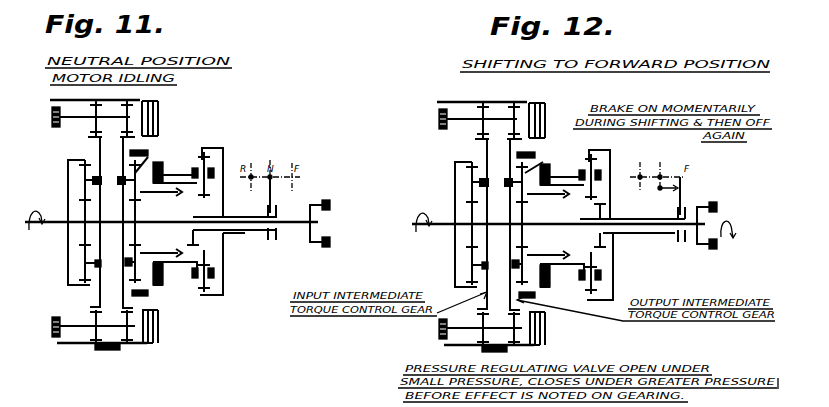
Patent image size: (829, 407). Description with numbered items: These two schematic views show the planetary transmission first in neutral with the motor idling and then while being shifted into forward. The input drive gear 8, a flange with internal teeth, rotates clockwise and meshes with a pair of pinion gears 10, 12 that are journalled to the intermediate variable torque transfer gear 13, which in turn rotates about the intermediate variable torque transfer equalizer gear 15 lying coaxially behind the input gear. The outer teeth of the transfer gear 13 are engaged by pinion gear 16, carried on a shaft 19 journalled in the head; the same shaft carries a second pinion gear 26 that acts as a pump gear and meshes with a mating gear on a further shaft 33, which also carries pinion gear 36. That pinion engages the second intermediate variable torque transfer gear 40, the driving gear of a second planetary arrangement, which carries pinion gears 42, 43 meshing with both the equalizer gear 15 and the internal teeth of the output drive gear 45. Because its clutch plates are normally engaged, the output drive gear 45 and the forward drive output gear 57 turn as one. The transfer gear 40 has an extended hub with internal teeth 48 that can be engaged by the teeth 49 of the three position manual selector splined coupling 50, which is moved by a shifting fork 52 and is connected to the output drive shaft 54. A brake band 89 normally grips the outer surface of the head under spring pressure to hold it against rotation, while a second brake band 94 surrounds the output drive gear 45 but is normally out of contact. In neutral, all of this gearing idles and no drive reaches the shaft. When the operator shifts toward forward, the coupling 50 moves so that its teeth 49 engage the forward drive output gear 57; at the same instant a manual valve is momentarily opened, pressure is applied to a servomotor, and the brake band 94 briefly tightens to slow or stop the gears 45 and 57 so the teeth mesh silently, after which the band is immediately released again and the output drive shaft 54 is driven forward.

In FIG. 11, the input drive gear 8 is at (66, 188).
In FIG. 12, the input drive gear 8 is at (455, 223).
In FIG. 11, the pinion gear 10 is at (69, 166).
In FIG. 12, the pinion gear 10 is at (445, 224).
In FIG. 11, the pinion gear 12 is at (95, 264).
In FIG. 12, the pinion gear 12 is at (477, 267).
In FIG. 11, the intermediate variable torque transfer gear 13 is at (98, 300).
In FIG. 12, the intermediate variable torque transfer gear 13 is at (475, 224).
In FIG. 11, the intermediate variable torque transfer equalizer gear 15 is at (108, 217).
In FIG. 12, the intermediate variable torque transfer equalizer gear 15 is at (558, 214).
In FIG. 11, the pinion gear 16 is at (86, 107).
In FIG. 12, the pinion gear 16 is at (479, 97).
In FIG. 11, the shaft 19 is at (75, 118).
In FIG. 12, the shaft 19 is at (474, 137).
In FIG. 11, the second pinion gear 26 is at (52, 118).
In FIG. 12, the second pinion gear 26 is at (463, 228).
In FIG. 11, the shaft 33 is at (142, 102).
In FIG. 12, the shaft 33 is at (527, 112).
In FIG. 11, the pinion gear 36 is at (133, 149).
In FIG. 12, the pinion gear 36 is at (543, 132).
In FIG. 11, the second intermediate variable torque transfer gear 40 is at (114, 283).
In FIG. 12, the second intermediate variable torque transfer gear 40 is at (634, 238).
In FIG. 11, the pinion gear 42 is at (163, 164).
In FIG. 12, the pinion gear 42 is at (554, 166).
In FIG. 11, the pinion gear 43 is at (149, 294).
In FIG. 12, the pinion gear 43 is at (551, 277).
In FIG. 11, the output drive gear 45 is at (150, 152).
In FIG. 12, the output drive gear 45 is at (577, 176).
In FIG. 11, the teeth 48 is at (177, 196).
In FIG. 12, the teeth 48 is at (548, 205).
In FIG. 11, the teeth 49 is at (192, 242).
In FIG. 12, the teeth 49 is at (621, 226).
In FIG. 11, the three position manual selector splined coupling 50 is at (205, 234).
In FIG. 12, the three position manual selector splined coupling 50 is at (623, 266).
In FIG. 11, the shifting fork 52 is at (275, 213).
In FIG. 11, the output drive shaft 54 is at (295, 228).
In FIG. 12, the output drive shaft 54 is at (698, 237).
In FIG. 11, the forward drive output gear 57 is at (213, 273).
In FIG. 12, the forward drive output gear 57 is at (611, 273).
In FIG. 11, the brake band 89 is at (110, 350).
In FIG. 12, the brake band 89 is at (493, 354).
In FIG. 11, the brake band 94 is at (150, 297).
In FIG. 12, the brake band 94 is at (562, 322).